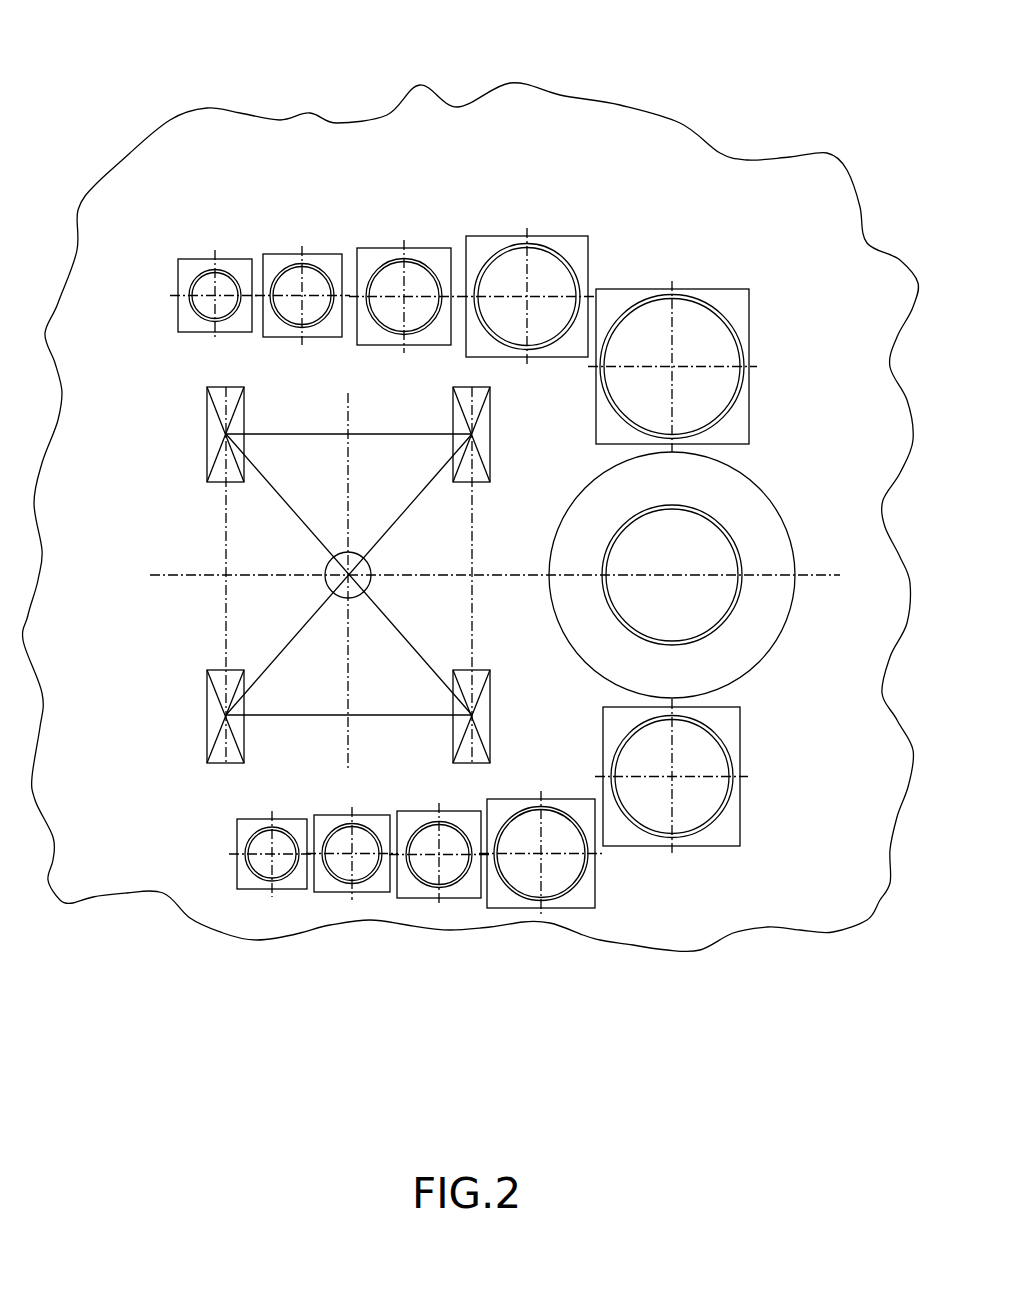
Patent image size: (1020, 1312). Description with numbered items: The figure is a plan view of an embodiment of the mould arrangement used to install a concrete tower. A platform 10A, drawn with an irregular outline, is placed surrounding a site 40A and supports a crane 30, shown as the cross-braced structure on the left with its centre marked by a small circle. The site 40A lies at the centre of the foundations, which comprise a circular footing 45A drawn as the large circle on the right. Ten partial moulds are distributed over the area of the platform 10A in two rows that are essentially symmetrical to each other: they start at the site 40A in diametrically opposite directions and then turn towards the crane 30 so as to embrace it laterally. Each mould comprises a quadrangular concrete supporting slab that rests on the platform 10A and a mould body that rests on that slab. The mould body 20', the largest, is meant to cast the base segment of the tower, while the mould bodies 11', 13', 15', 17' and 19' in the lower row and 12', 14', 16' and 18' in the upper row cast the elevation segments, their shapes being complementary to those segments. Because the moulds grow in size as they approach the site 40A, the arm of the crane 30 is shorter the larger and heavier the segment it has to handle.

The platform 10A is at (471, 496).
The crane 30 is at (194, 620).
The mould body 12' is at (193, 178).
The mould body 14' is at (302, 180).
The mould body 16' is at (408, 176).
The mould body 18' is at (545, 185).
The mould body 20' is at (759, 296).
The site 40A is at (769, 566).
The footing 45A is at (742, 582).
The mould body 19' is at (741, 865).
The mould body 11' is at (248, 941).
The mould body 13' is at (347, 944).
The mould body 15' is at (439, 935).
The mould body 17' is at (567, 923).